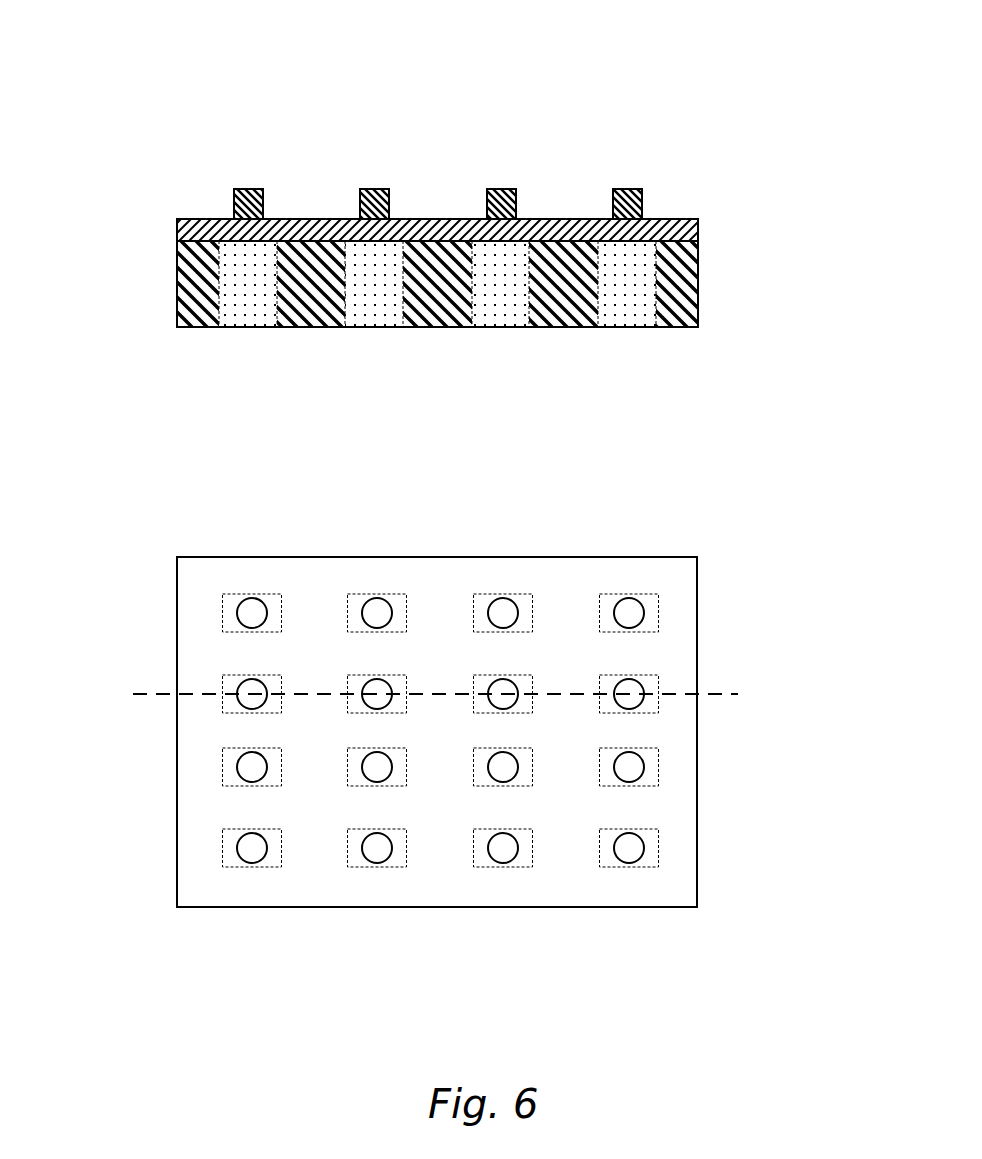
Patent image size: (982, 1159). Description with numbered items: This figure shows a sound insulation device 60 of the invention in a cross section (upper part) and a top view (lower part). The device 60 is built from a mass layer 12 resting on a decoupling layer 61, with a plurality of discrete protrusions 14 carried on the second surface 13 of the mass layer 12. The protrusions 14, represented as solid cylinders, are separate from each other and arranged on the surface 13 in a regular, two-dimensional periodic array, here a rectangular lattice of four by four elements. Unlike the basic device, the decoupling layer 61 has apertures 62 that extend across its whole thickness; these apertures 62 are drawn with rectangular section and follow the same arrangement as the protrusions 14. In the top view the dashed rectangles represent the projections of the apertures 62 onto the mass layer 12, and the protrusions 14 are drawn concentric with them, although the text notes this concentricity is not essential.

The device 60 is at (740, 292).
The second surface 13 is at (198, 219).
The mass layer 12 is at (177, 233).
The decoupling layer 61 is at (187, 282).
The apertures 62 is at (372, 317).
The protrusions 14 is at (628, 190).